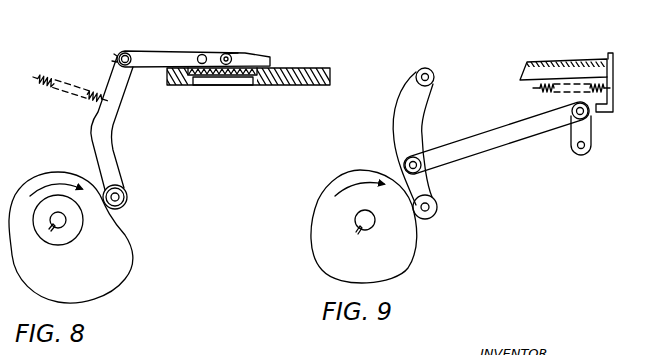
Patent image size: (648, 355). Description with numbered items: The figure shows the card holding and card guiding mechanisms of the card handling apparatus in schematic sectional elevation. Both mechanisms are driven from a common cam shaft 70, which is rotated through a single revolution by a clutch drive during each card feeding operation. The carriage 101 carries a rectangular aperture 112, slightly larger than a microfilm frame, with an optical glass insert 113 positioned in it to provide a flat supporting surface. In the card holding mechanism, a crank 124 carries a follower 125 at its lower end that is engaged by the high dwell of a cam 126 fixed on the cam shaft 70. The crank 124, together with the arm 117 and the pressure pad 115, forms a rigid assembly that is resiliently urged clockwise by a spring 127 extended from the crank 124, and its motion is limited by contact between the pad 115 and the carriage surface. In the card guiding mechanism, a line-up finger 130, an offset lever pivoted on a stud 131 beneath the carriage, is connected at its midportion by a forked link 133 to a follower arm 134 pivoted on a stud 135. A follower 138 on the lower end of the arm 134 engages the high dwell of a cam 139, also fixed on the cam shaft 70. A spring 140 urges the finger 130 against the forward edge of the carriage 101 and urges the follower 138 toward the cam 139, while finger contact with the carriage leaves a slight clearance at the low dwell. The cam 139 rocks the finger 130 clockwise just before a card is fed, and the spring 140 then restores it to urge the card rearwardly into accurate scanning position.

In FIG. 8, the cam shaft 70 is at (66, 221).
In FIG. 9, the cam shaft 70 is at (358, 215).
In FIG. 8, the carriage 101 is at (303, 68).
In FIG. 9, the carriage 101 is at (553, 63).
In FIG. 8, the rectangular aperture 112 is at (241, 87).
In FIG. 8, the optical glass insert 113 is at (207, 87).
In FIG. 8, the pressure pad 115 is at (256, 56).
In FIG. 8, the arm 117 is at (157, 54).
In FIG. 8, the crank 124 is at (110, 134).
In FIG. 8, the follower 125 is at (127, 198).
In FIG. 8, the cam 126 is at (125, 258).
In FIG. 8, the spring 127 is at (58, 81).
In FIG. 9, the line-up finger 130 is at (595, 138).
In FIG. 9, the stud 131 is at (577, 158).
In FIG. 9, the forked link 133 is at (490, 148).
In FIG. 9, the follower arm 134 is at (410, 121).
In FIG. 9, the stud 135 is at (431, 73).
In FIG. 9, the follower 138 is at (437, 207).
In FIG. 9, the cam 139 is at (408, 255).
In FIG. 9, the spring 140 is at (547, 95).